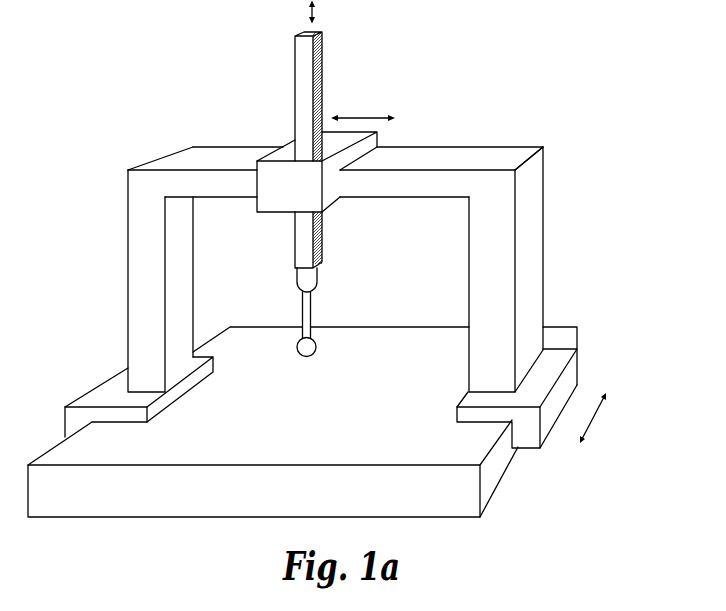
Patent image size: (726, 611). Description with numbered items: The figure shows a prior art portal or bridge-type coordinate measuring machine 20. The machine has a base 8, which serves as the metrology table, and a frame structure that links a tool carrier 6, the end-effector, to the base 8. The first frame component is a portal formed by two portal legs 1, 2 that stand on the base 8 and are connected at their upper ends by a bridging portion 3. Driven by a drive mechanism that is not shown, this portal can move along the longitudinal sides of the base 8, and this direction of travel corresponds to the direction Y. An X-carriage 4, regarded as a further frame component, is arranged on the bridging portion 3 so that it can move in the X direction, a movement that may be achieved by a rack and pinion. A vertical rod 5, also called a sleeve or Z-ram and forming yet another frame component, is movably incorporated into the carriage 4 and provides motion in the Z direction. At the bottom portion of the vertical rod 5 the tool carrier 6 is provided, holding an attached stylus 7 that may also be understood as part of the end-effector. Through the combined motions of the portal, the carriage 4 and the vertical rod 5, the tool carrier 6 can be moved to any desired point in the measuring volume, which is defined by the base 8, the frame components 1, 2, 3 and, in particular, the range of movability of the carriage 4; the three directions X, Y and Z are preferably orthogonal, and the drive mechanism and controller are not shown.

The coordinate measuring machine 20 is at (234, 101).
The portal leg 1 is at (147, 300).
The portal leg 2 is at (525, 298).
The bridging portion 3 is at (165, 162).
The X-carriage 4 is at (376, 147).
The vertical rod 5 is at (303, 62).
The tool carrier 6 is at (305, 286).
The stylus 7 is at (311, 318).
The base 8 is at (483, 493).